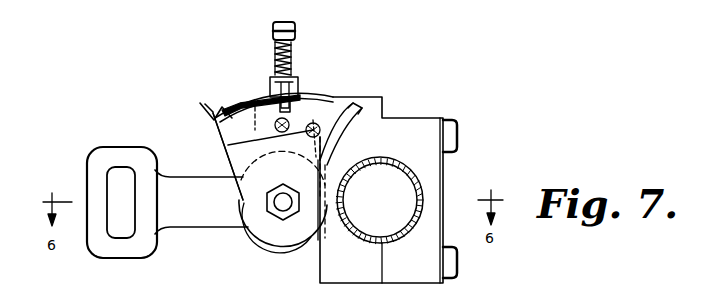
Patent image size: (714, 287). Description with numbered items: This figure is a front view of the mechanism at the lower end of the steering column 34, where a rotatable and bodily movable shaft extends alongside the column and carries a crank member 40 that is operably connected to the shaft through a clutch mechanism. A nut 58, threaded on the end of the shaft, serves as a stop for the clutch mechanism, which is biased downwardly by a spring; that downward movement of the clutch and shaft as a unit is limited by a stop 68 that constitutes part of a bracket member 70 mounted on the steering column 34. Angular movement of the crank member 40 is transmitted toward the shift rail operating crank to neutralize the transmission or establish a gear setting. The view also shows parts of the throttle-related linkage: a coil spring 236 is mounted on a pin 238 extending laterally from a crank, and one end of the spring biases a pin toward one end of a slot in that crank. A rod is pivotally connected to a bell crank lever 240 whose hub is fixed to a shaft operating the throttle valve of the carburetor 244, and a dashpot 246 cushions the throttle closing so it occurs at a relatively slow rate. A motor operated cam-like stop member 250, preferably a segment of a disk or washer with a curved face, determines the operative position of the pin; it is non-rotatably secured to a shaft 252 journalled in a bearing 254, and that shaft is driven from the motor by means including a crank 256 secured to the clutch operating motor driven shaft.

The steering column 34 is at (420, 182).
The crank member 40 is at (213, 222).
The nut 58 is at (283, 211).
The stop 68 is at (320, 233).
The bracket member 70 is at (420, 123).
The coil spring 236 is at (298, 40).
The pin 238 is at (273, 79).
The bell crank lever 240 is at (301, 92).
The carburetor 244 is at (238, 104).
The dashpot 246 is at (222, 128).
The cam-like stop member 250 is at (329, 110).
The shaft 252 is at (233, 145).
The bearing 254 is at (214, 110).
The crank 256 is at (383, 102).